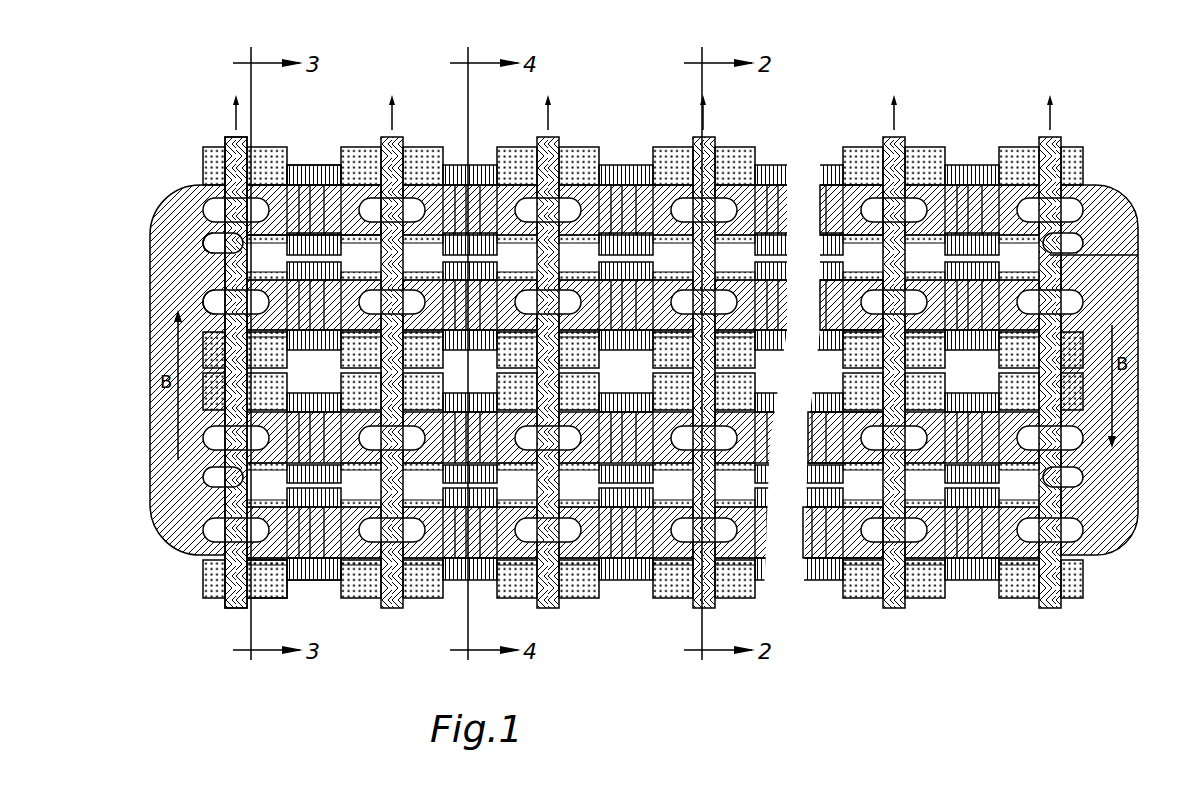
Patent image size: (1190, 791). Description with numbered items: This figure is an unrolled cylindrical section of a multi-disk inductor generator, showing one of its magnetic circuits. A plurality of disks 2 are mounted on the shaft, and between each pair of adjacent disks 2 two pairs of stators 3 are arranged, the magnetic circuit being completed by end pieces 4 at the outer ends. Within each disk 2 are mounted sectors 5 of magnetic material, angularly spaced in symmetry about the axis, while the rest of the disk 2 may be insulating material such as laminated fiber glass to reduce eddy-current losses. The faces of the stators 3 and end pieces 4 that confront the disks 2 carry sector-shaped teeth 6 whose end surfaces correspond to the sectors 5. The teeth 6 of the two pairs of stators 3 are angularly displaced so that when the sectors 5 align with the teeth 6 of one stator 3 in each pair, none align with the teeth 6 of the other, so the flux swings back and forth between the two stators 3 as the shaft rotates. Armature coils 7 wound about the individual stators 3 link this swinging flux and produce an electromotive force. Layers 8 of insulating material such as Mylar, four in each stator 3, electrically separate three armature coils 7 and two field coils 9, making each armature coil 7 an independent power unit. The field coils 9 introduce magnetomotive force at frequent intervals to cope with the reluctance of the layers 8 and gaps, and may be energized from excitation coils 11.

The disk 2 is at (230, 140).
The stator 3 is at (848, 214).
The end piece 4 is at (166, 212).
The sector 5 is at (228, 195).
The tooth 6 is at (212, 267).
The armature coil 7 is at (318, 165).
The insulating layer 8 is at (300, 580).
The field coil 9 is at (268, 598).
The excitation coil 11 is at (1138, 255).